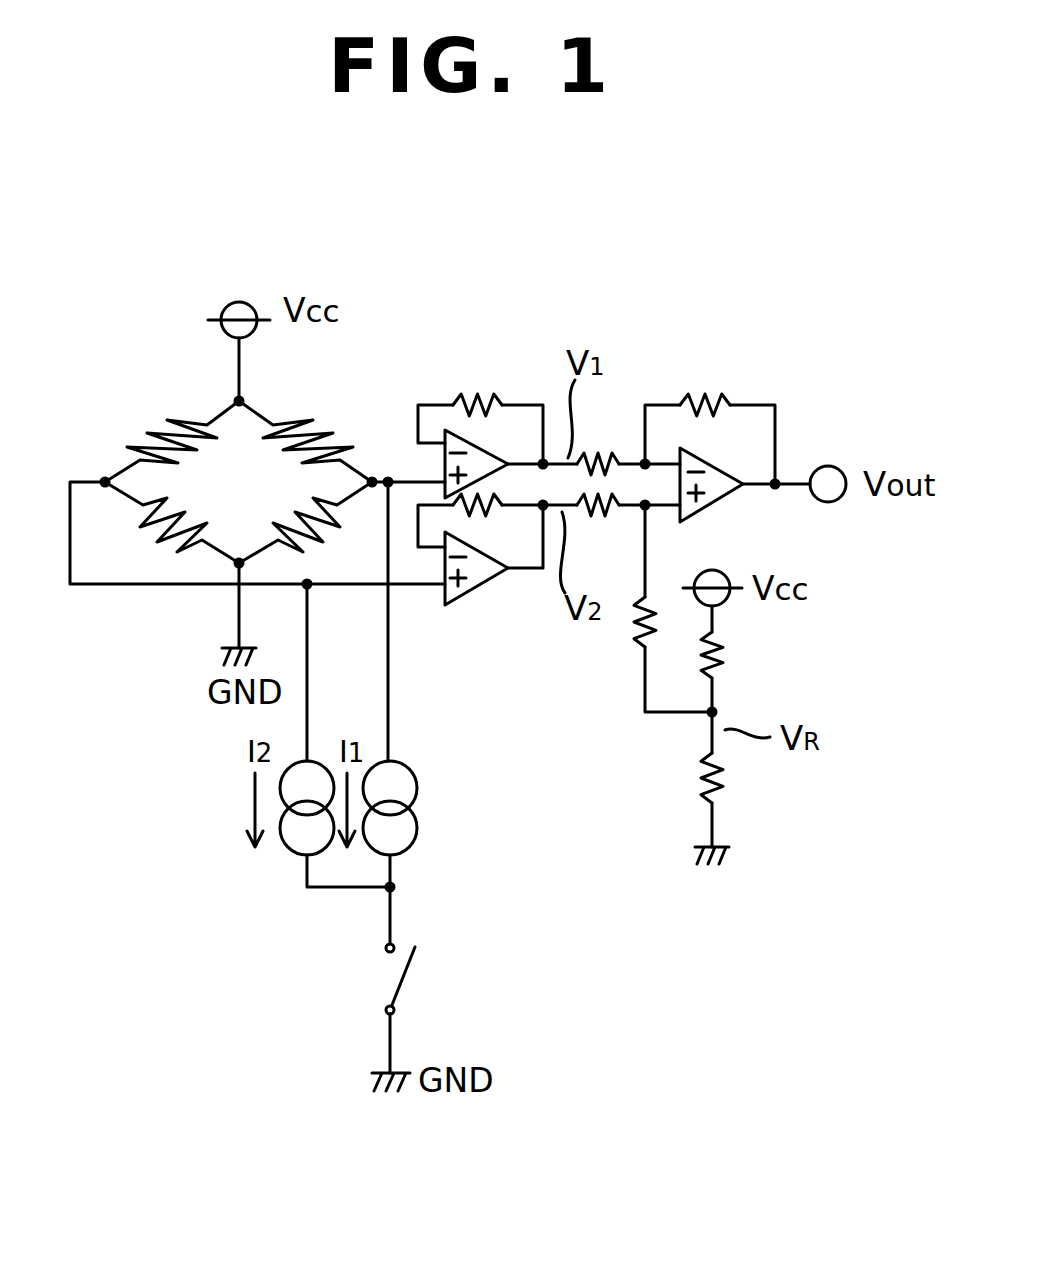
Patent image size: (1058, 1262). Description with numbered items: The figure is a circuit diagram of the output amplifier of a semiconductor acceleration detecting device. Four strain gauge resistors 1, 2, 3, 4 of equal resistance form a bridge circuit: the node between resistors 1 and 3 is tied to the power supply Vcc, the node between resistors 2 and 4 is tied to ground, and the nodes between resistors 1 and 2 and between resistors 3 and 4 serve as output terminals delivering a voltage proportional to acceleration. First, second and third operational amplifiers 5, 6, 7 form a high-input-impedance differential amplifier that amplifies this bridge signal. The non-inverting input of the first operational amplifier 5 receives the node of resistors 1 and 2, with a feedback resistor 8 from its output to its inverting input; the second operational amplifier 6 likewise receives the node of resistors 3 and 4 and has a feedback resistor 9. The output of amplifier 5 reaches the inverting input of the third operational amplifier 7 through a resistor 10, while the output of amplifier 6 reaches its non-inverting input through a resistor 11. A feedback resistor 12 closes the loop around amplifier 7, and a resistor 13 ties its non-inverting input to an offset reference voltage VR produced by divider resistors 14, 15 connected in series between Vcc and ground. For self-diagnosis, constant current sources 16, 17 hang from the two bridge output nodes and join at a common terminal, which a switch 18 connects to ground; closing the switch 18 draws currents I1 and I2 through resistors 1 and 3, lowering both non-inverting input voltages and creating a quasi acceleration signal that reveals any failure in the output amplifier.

The strain gauge resistor 1 is at (308, 425).
The strain gauge resistor 2 is at (318, 537).
The strain gauge resistor 3 is at (163, 428).
The strain gauge resistor 4 is at (146, 530).
The first operational amplifier 5 is at (502, 458).
The second operational amplifier 6 is at (480, 586).
The third operational amplifier 7 is at (722, 468).
The feedback resistor 8 is at (482, 396).
The feedback resistor 9 is at (490, 515).
The resistor 10 is at (618, 455).
The resistor 11 is at (593, 518).
The feedback resistor 12 is at (698, 393).
The resistor 13 is at (630, 635).
The resistor 14 is at (727, 780).
The resistor 15 is at (727, 647).
The constant current source 16 is at (417, 807).
The constant current source 17 is at (285, 845).
The switch 18 is at (403, 980).